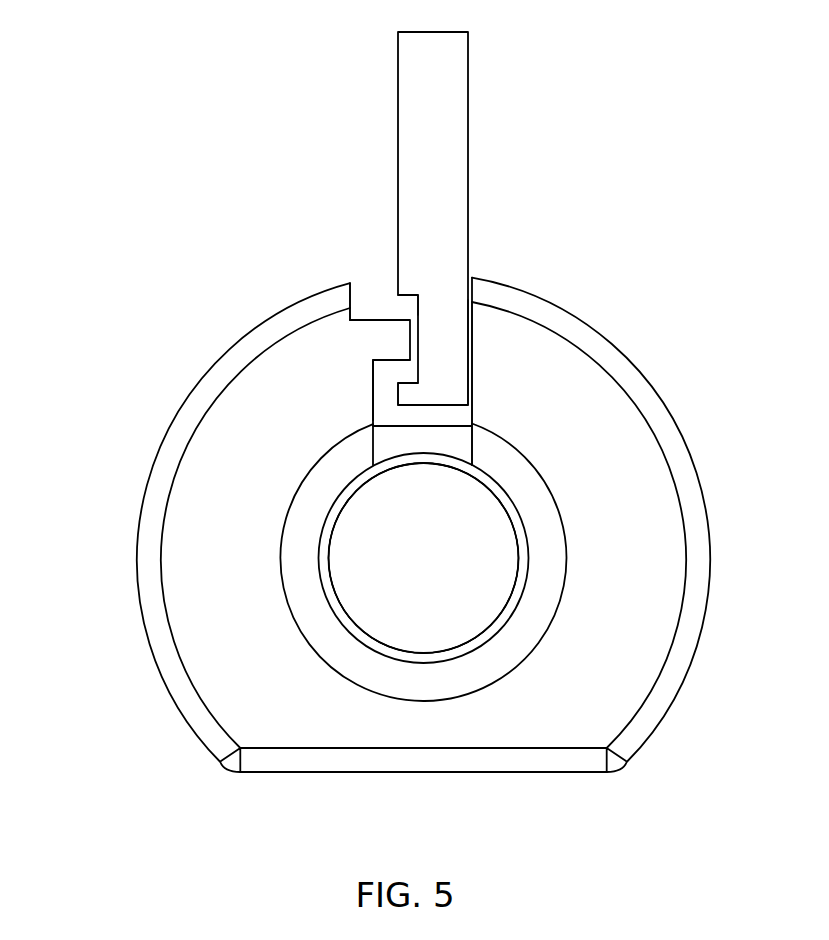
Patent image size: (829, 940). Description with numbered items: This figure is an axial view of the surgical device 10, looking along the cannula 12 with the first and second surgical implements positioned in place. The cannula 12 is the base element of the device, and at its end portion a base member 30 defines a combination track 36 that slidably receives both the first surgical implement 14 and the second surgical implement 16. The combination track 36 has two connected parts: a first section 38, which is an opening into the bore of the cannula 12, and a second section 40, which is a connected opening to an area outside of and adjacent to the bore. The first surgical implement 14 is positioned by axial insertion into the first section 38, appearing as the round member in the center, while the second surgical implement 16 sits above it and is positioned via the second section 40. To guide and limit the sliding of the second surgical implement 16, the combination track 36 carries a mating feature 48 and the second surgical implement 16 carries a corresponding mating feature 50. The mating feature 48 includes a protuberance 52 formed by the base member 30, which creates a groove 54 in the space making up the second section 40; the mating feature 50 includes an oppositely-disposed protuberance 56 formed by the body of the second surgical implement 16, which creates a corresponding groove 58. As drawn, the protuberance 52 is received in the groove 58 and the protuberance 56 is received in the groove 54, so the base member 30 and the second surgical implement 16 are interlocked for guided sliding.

The surgical device 10 is at (712, 141).
The cannula 12 is at (211, 349).
The first surgical implement 14 is at (407, 606).
The second surgical implement 16 is at (438, 88).
The base member 30 is at (637, 462).
The combination track 36 is at (330, 534).
The first section 38 is at (468, 627).
The second section 40 is at (473, 392).
The mating feature 48 is at (353, 355).
The mating feature 50 is at (457, 364).
The protuberance 52 is at (386, 342).
The groove 54 is at (390, 372).
The protuberance 56 is at (406, 396).
The groove 58 is at (406, 302).